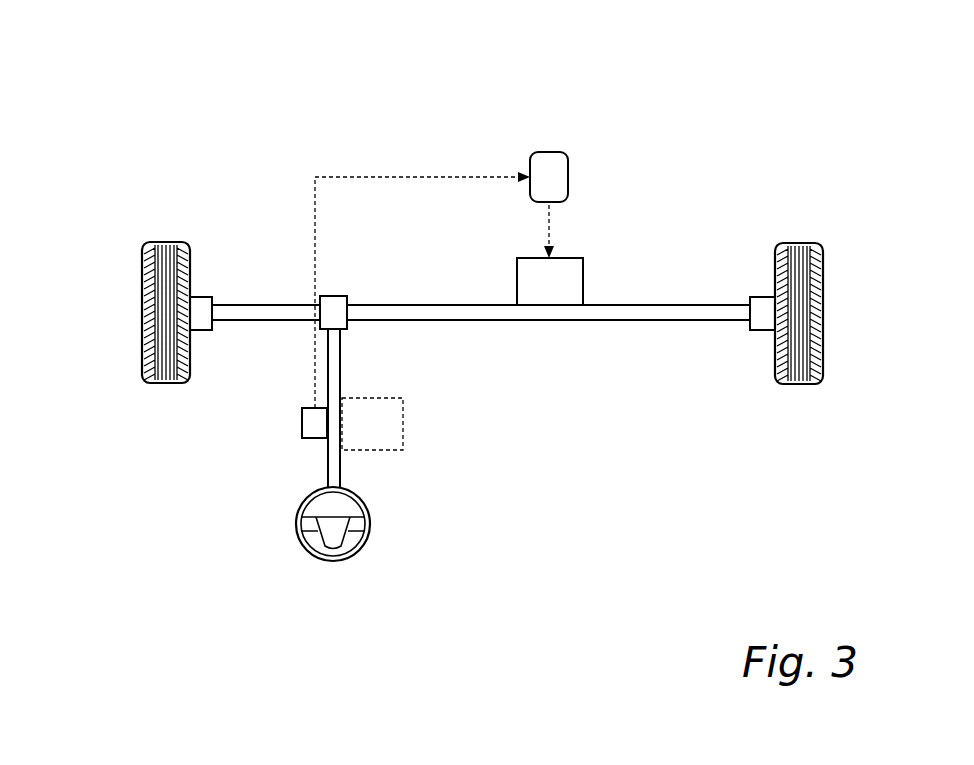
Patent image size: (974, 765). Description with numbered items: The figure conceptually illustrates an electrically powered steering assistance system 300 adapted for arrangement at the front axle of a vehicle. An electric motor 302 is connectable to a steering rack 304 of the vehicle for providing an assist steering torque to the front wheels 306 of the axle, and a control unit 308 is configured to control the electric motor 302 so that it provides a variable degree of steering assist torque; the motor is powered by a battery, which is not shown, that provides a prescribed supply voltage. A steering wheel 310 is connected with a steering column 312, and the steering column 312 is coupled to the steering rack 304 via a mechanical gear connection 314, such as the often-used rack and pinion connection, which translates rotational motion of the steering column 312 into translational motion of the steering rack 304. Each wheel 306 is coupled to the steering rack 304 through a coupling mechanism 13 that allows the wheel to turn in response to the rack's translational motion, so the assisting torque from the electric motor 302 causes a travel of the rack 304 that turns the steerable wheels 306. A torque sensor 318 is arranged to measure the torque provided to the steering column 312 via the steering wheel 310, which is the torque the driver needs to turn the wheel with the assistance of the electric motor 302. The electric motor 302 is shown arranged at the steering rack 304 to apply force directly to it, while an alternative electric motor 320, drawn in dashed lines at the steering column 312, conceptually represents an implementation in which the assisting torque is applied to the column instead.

The electrically powered steering assistance system 300 is at (262, 160).
The electric motor 302 is at (584, 280).
The steering rack 304 is at (604, 332).
The front wheels 306 is at (122, 300).
The control unit 308 is at (549, 150).
The steering wheel 310 is at (383, 530).
The steering column 312 is at (327, 470).
The mechanical gear connection 314 is at (334, 296).
The torque sensor 318 is at (302, 423).
The alternative electric motor 320 is at (403, 420).
The coupling mechanism 13 is at (198, 296).